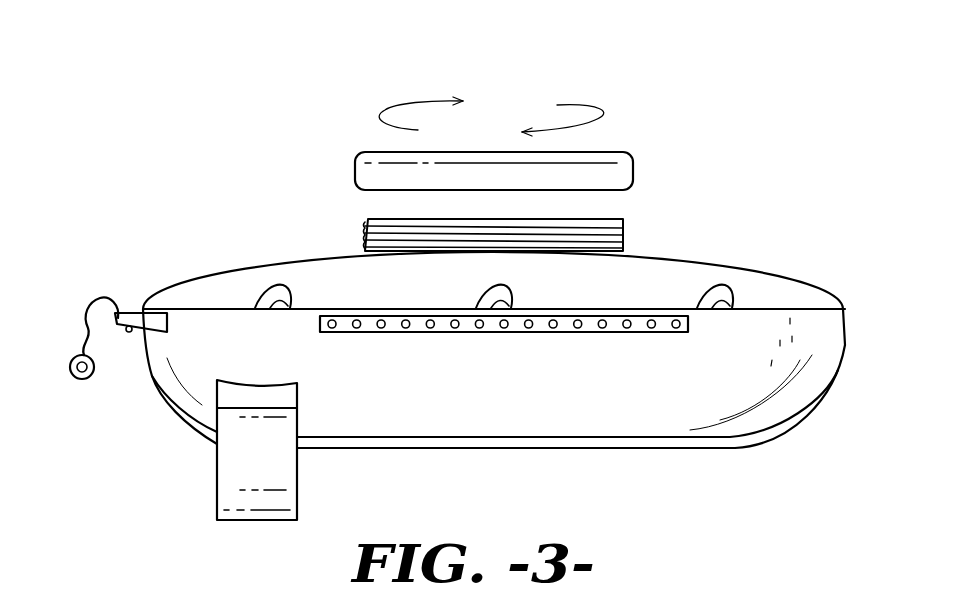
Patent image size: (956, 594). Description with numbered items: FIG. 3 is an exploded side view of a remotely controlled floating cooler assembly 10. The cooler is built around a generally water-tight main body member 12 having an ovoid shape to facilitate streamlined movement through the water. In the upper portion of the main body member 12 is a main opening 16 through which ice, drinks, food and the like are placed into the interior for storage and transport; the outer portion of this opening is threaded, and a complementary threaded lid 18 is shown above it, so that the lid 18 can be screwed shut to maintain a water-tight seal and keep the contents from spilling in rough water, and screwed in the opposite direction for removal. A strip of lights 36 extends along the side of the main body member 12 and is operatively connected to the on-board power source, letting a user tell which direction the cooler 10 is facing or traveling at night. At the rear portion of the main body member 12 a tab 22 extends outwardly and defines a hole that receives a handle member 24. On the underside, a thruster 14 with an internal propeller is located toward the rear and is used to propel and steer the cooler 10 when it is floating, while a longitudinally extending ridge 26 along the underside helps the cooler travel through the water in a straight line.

The remotely controlled floating cooler assembly 10 is at (788, 249).
The main body member 12 is at (703, 401).
The thruster 14 is at (228, 507).
The main opening 16 is at (608, 224).
The lid 18 is at (486, 160).
The tab 22 is at (138, 312).
The handle member 24 is at (76, 380).
The longitudinally extending ridge 26 is at (596, 449).
The strip of lights 36 is at (322, 320).